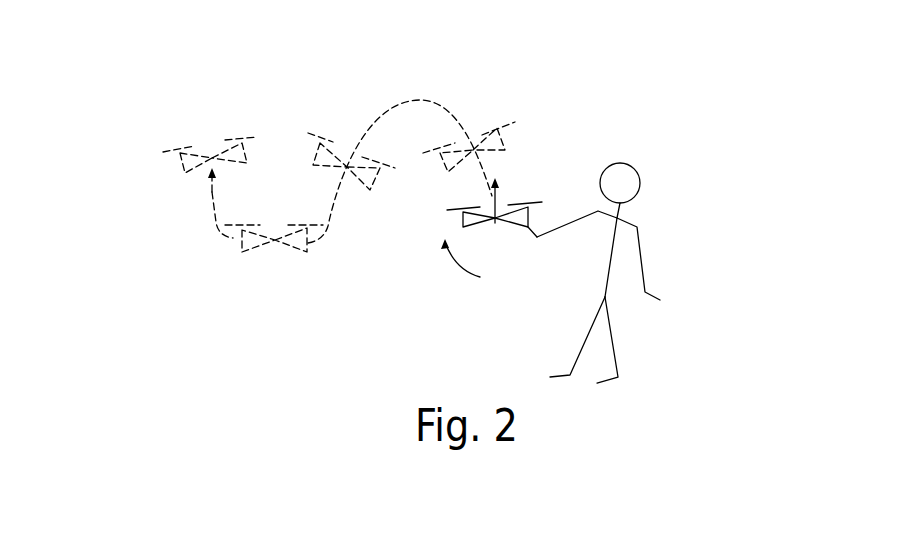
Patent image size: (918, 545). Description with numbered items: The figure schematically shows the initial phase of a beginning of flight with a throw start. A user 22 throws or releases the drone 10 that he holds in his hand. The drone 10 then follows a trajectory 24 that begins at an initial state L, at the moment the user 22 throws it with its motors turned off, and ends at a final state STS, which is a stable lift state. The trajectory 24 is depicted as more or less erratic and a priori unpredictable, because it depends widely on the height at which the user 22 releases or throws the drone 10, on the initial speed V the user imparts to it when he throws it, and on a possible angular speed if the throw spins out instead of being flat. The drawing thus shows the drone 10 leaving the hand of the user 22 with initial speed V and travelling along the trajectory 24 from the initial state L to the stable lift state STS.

The drone 10 is at (478, 228).
The user 22 is at (725, 185).
The trajectory 24 is at (420, 98).
The initial speed V is at (497, 198).
The initial state L is at (545, 211).
The stable lift state STS is at (160, 159).